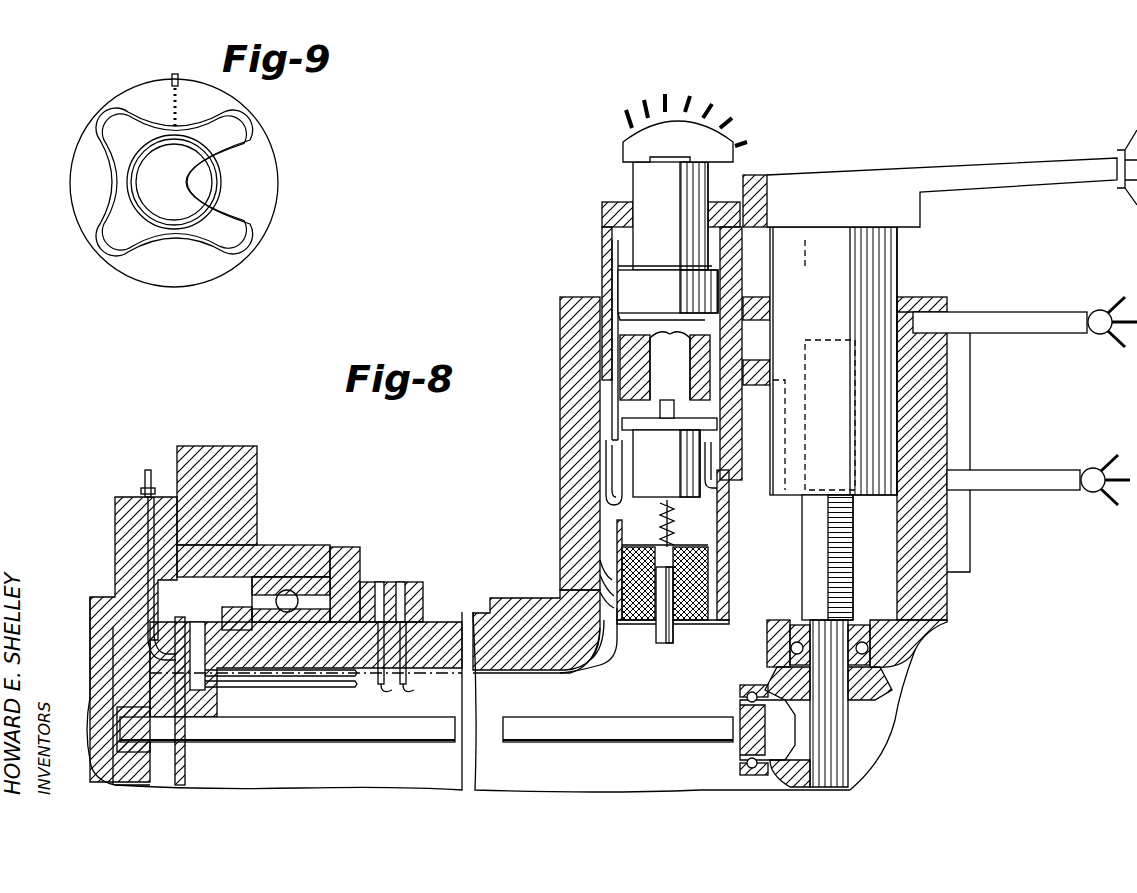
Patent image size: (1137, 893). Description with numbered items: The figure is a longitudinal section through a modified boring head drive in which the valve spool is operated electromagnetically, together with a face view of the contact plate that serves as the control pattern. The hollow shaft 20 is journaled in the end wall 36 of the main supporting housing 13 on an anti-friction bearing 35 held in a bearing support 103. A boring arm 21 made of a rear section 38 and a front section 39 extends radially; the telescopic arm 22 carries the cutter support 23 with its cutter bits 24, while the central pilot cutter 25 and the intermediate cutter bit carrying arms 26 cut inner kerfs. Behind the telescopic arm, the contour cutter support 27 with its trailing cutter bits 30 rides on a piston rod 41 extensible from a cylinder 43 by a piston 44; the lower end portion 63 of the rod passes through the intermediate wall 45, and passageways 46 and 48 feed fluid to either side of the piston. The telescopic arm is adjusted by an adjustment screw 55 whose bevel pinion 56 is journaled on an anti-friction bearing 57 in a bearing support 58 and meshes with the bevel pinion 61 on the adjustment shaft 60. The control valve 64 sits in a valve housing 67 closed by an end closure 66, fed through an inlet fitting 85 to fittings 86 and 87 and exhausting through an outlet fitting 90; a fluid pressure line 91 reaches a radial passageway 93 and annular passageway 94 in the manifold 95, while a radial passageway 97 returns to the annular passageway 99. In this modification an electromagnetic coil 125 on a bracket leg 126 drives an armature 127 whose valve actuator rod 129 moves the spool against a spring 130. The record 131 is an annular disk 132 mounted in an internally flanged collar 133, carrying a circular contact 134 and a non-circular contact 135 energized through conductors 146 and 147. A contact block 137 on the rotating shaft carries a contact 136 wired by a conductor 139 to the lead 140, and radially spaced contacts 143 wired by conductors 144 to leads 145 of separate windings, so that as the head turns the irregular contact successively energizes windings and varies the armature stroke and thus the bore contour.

In FIG. 8, the main supporting housing 13 is at (183, 452).
In FIG. 8, the hollow shaft 20 is at (520, 606).
In FIG. 8, the boring arm 21 is at (956, 440).
In FIG. 8, the telescopic arm 22 is at (900, 272).
In FIG. 8, the cutter support 23 is at (924, 172).
In FIG. 8, the cutter bit 24 is at (1120, 140).
In FIG. 8, the central pilot cutter 25 is at (1068, 490).
In FIG. 8, the intermediate cutter bit carrying arm 26 is at (1030, 312).
In FIG. 8, the contour cutter support 27 is at (623, 152).
In FIG. 8, the cutter bit 30 is at (715, 112).
In FIG. 8, the anti-friction bearing 35 is at (290, 597).
In FIG. 8, the end wall 36 is at (258, 464).
In FIG. 8, the rear section 38 is at (565, 394).
In FIG. 8, the front section 39 is at (950, 590).
In FIG. 8, the piston rod 41 is at (633, 184).
In FIG. 8, the cylinder 43 is at (605, 248).
In FIG. 8, the piston 44 is at (625, 287).
In FIG. 8, the intermediate wall 45 is at (735, 362).
In FIG. 8, the fluid pressure passageway 46 is at (606, 376).
In FIG. 8, the passageway 48 is at (612, 300).
In FIG. 8, the adjustment screw 55 is at (806, 555).
In FIG. 8, the bevel pinion 56 is at (872, 738).
In FIG. 8, the anti-friction bearing 57 is at (875, 656).
In FIG. 8, the bearing support 58 is at (890, 692).
In FIG. 8, the adjustment shaft 60 is at (397, 742).
In FIG. 8, the bevel pinion 61 is at (822, 744).
In FIG. 8, the lower end portion of piston rod 63 is at (600, 340).
In FIG. 8, the control valve 64 is at (646, 500).
In FIG. 8, the end closure 66 is at (622, 428).
In FIG. 8, the valve housing 67 is at (625, 490).
In FIG. 8, the inlet fitting 85 is at (722, 484).
In FIG. 8, the fitting 86 is at (632, 456).
In FIG. 8, the fitting 87 is at (620, 474).
In FIG. 8, the outlet fitting 90 is at (792, 425).
In FIG. 8, the fluid pressure line 91 is at (722, 518).
In FIG. 8, the radial passageway 93 is at (408, 690).
In FIG. 8, the annular passageway 94 is at (425, 603).
In FIG. 8, the manifold 95 is at (365, 586).
In FIG. 8, the radial passageway 97 is at (378, 690).
In FIG. 8, the annular passageway 99 is at (400, 610).
In FIG. 8, the bearing support 103 is at (122, 497).
In FIG. 8, the electromagnetic coil 125 is at (695, 622).
In FIG. 8, the bracket leg 126 is at (730, 540).
In FIG. 8, the armature 127 is at (663, 644).
In FIG. 8, the valve actuator rod 129 is at (660, 530).
In FIG. 8, the spring 130 is at (675, 524).
In FIG. 9, the record 131 is at (262, 200).
In FIG. 8, the record 131 is at (188, 760).
In FIG. 9, the annular disk 132 is at (103, 255).
In FIG. 8, the annular disk 132 is at (187, 777).
In FIG. 8, the internally flanged collar 133 is at (205, 600).
In FIG. 9, the circular contact 134 is at (205, 147).
In FIG. 8, the circular contact 134 is at (188, 698).
In FIG. 9, the non-circular contact 135 is at (218, 120).
In FIG. 8, the non-circular contact 135 is at (205, 658).
In FIG. 9, the contact 136 is at (165, 140).
In FIG. 8, the contact 136 is at (205, 690).
In FIG. 8, the contact block 137 is at (198, 624).
In FIG. 8, the conductor 139 is at (298, 678).
In FIG. 8, the lead 140 is at (614, 630).
In FIG. 9, the contacts 143 is at (176, 108).
In FIG. 8, the contacts 143 is at (175, 676).
In FIG. 8, the conductors 144 is at (248, 664).
In FIG. 8, the leads 145 is at (603, 590).
In FIG. 8, the conductor 146 is at (174, 694).
In FIG. 8, the conductor 147 is at (158, 642).